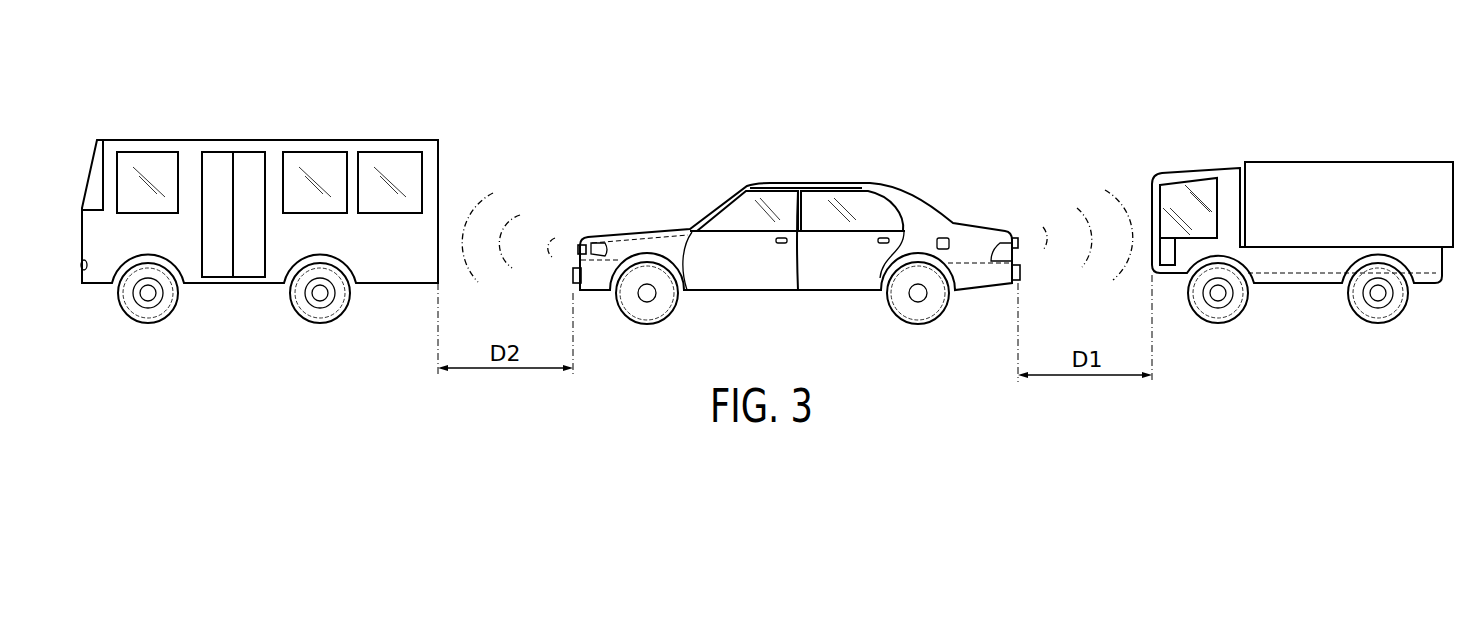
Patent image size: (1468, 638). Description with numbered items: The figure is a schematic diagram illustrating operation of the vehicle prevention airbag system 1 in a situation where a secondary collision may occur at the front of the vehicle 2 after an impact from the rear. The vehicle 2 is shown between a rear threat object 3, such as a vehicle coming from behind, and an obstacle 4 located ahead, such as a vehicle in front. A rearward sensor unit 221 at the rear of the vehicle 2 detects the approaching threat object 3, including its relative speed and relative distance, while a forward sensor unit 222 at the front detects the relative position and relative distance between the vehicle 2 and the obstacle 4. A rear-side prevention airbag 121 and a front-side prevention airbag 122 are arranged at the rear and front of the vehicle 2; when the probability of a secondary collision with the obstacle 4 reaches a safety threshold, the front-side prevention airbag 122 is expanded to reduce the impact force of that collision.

The vehicle prevention airbag system 1 is at (695, 151).
The vehicle 2 is at (927, 200).
The threat object 3 is at (1338, 158).
The obstacle 4 is at (265, 136).
The rear-side prevention airbag 121 is at (1022, 273).
The front-side prevention airbag 122 is at (573, 278).
The rearward sensor unit 221 is at (1018, 240).
The forward sensor unit 222 is at (580, 245).